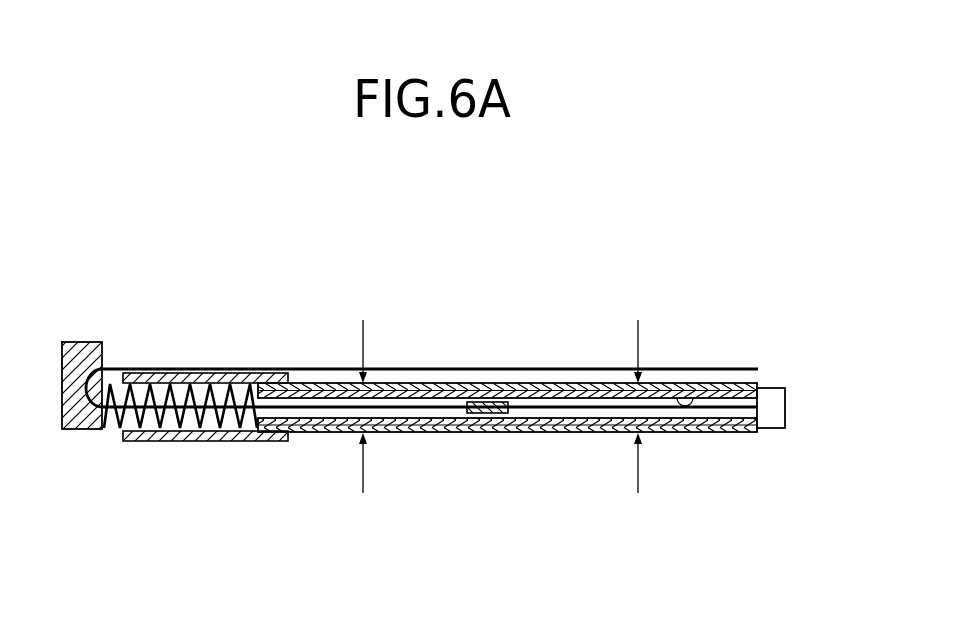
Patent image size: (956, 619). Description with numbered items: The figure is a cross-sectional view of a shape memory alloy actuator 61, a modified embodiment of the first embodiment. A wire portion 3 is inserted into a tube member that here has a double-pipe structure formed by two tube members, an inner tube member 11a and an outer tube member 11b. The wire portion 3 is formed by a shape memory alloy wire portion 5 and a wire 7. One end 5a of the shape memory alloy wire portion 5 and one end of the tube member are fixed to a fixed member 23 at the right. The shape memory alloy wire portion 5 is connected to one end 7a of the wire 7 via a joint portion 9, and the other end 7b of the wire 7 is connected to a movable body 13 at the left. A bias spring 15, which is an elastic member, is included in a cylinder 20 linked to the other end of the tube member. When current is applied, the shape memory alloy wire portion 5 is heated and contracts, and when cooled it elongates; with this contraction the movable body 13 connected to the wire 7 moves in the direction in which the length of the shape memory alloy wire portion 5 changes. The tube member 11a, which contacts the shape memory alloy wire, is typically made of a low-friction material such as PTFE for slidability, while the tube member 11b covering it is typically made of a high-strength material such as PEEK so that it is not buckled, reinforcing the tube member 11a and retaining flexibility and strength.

The shape memory alloy actuator 61 is at (620, 264).
The movable body 13 is at (77, 342).
The bias spring 15 is at (113, 410).
The other end of wire 7b is at (118, 370).
The cylinder 20 is at (191, 369).
The wire portion 3 is at (412, 513).
The one end of wire 7a is at (302, 406).
The tube member 11b is at (563, 384).
The wire 7 is at (416, 415).
The shape memory alloy wire portion 5 is at (560, 420).
The one end of shape memory alloy wire portion 5a is at (750, 422).
The joint portion 9 is at (495, 402).
The tube member 11a is at (697, 395).
The fixed member 23 is at (777, 388).